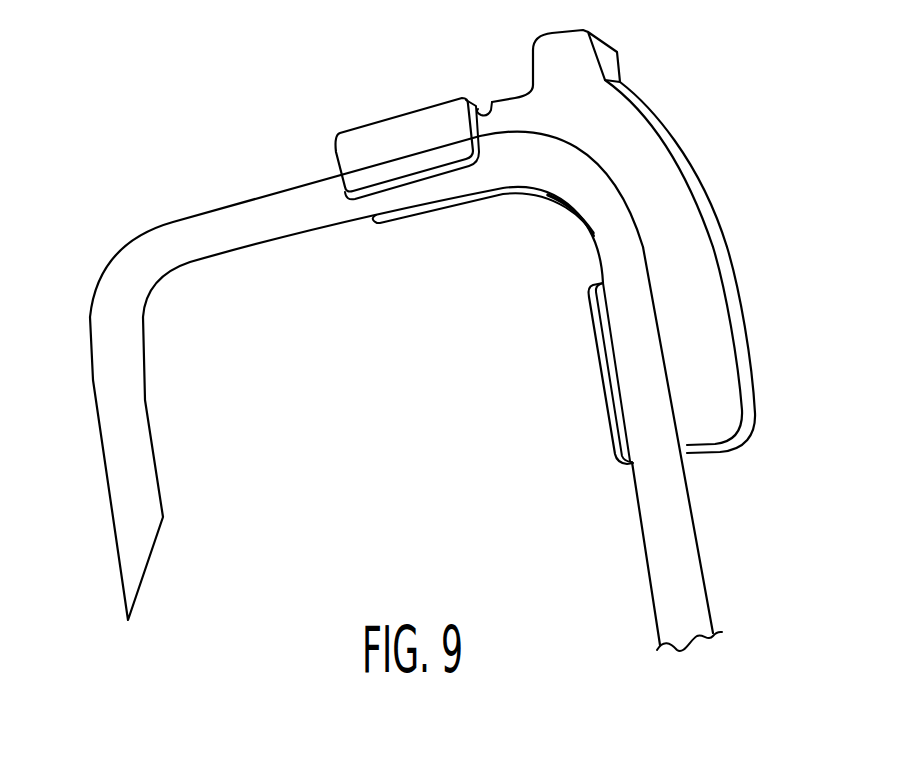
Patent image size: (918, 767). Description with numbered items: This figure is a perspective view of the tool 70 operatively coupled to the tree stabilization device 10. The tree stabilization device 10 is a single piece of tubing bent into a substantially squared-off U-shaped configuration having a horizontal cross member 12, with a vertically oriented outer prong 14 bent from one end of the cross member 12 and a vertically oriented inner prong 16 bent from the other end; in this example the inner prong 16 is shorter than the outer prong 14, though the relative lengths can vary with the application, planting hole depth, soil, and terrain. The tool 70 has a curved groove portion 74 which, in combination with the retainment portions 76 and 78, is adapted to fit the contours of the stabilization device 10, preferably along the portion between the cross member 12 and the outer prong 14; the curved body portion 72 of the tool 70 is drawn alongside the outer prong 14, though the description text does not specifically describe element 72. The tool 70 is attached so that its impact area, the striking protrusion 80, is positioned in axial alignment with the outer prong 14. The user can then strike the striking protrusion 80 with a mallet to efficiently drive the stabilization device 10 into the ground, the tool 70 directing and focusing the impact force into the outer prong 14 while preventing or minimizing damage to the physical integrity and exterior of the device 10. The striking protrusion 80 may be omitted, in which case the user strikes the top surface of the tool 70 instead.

The tree stabilization device 10 is at (248, 239).
The horizontal cross member 12 is at (284, 246).
The outer prong 14 is at (646, 556).
The inner prong 16 is at (118, 443).
The tool 70 is at (662, 117).
The curved arm of clip 72 is at (688, 213).
The curved groove portion 74 is at (503, 194).
The retainment portion 76 is at (407, 117).
The retainment portion 78 is at (610, 427).
The striking protrusion 80 is at (556, 34).